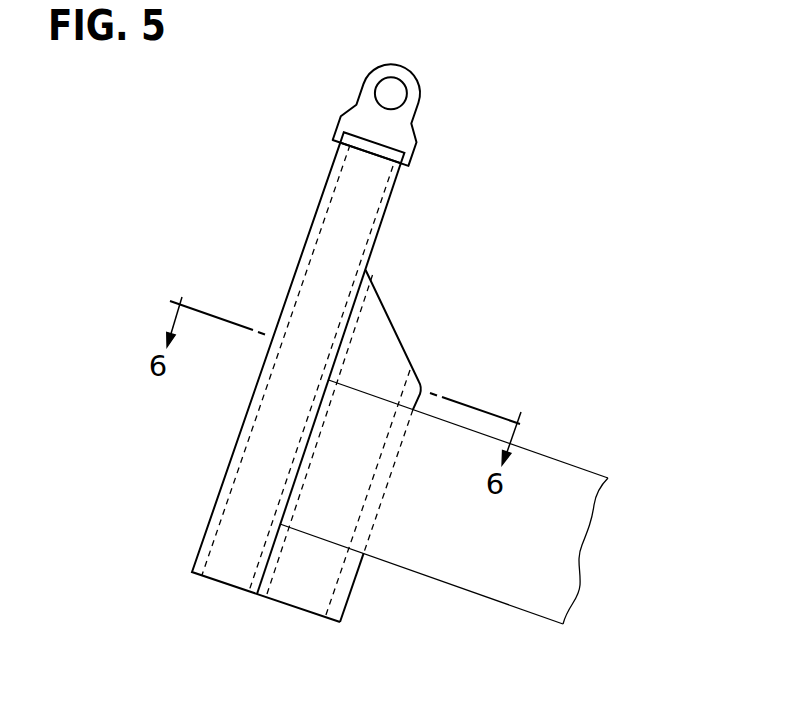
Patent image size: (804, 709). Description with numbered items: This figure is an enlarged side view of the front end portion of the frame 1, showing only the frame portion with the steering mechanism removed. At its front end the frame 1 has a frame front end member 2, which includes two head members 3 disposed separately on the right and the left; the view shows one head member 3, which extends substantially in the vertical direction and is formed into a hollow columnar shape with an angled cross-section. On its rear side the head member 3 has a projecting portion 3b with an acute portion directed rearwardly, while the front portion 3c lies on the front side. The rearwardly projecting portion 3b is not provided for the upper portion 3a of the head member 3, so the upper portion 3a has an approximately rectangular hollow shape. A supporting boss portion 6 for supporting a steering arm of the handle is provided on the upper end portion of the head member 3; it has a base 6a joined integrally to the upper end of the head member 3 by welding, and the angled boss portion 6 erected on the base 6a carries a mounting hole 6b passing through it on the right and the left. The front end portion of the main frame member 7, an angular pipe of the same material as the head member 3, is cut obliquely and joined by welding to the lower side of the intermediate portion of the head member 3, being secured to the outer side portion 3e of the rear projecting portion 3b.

The frame 1 is at (587, 400).
The frame front end member 2 is at (371, 119).
The head member 3 is at (351, 396).
The upper portion of the head member 3a is at (362, 195).
The projecting portion 3b is at (382, 332).
The front portion of the head member 3c is at (313, 303).
The outer side portion of the rear projecting portion 3e is at (317, 567).
The supporting boss portion 6 is at (397, 111).
The base 6a is at (412, 153).
The mounting hole 6b is at (397, 90).
The main frame member 7 is at (572, 528).